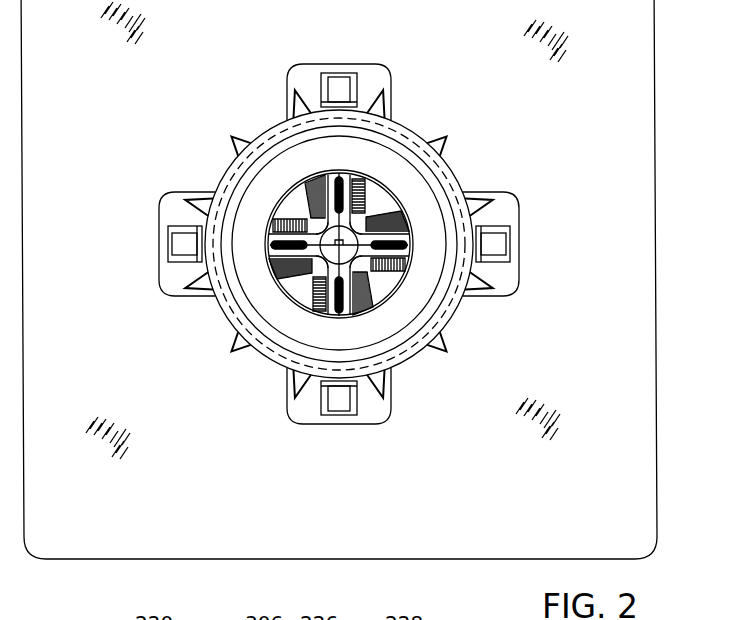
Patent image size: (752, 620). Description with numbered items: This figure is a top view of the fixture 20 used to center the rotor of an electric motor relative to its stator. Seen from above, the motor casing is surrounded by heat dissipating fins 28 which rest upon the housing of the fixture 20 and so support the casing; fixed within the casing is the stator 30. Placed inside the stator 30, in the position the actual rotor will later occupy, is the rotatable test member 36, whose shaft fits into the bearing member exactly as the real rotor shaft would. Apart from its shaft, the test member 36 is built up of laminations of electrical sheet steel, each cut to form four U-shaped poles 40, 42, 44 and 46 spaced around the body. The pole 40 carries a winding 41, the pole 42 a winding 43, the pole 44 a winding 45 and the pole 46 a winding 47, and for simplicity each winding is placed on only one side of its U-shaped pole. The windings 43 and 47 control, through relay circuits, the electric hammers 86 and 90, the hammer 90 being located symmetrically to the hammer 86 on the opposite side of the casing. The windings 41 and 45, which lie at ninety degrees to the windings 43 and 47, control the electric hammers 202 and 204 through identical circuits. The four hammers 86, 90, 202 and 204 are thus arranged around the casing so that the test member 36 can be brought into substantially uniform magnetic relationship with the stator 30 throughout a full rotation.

The fixture 20 is at (650, 130).
The heat dissipating fins 28 is at (452, 138).
The stator 30 is at (243, 180).
The rotatable test member 36 is at (317, 222).
The U-shaped pole 40 is at (337, 171).
The winding 41 is at (356, 187).
The U-shaped pole 42 is at (403, 238).
The winding 43 is at (397, 266).
The U-shaped pole 44 is at (346, 312).
The winding 45 is at (317, 308).
The U-shaped pole 46 is at (267, 260).
The winding 47 is at (280, 222).
The electric hammer 86 is at (497, 265).
The electric hammer 90 is at (175, 224).
The electric hammer 202 is at (365, 85).
The electric hammer 204 is at (363, 402).